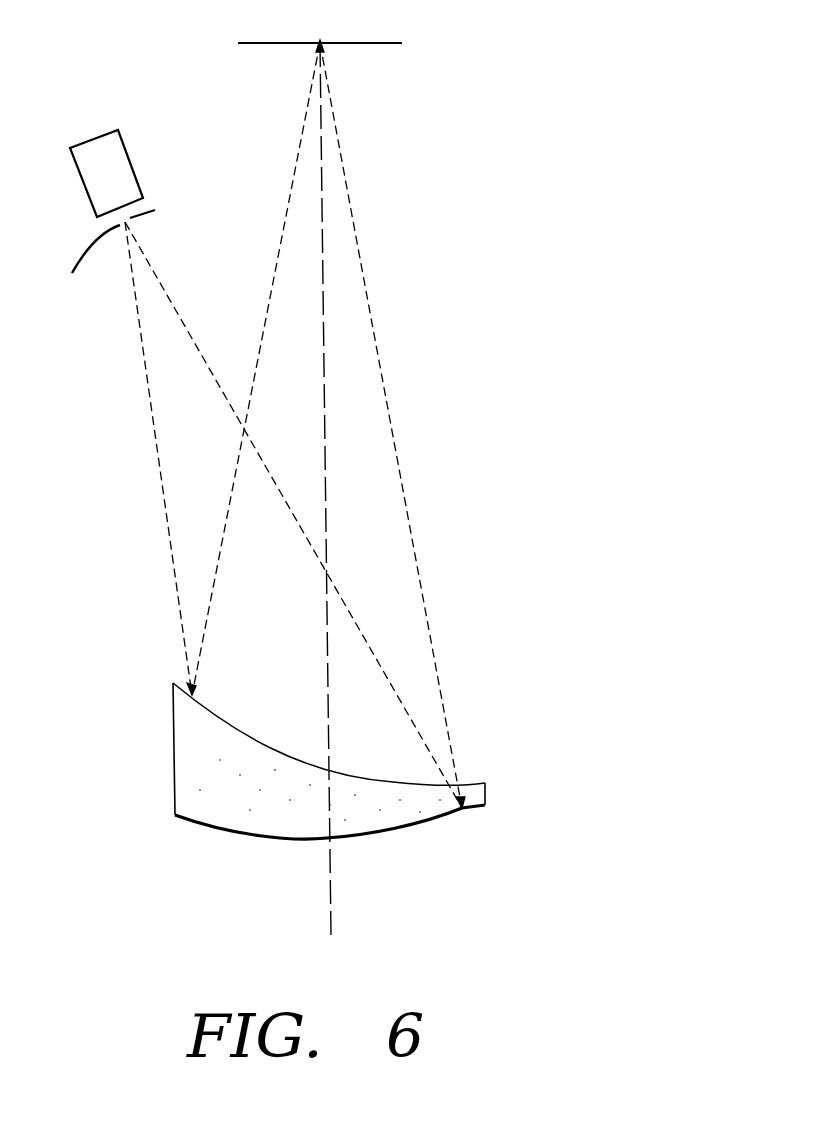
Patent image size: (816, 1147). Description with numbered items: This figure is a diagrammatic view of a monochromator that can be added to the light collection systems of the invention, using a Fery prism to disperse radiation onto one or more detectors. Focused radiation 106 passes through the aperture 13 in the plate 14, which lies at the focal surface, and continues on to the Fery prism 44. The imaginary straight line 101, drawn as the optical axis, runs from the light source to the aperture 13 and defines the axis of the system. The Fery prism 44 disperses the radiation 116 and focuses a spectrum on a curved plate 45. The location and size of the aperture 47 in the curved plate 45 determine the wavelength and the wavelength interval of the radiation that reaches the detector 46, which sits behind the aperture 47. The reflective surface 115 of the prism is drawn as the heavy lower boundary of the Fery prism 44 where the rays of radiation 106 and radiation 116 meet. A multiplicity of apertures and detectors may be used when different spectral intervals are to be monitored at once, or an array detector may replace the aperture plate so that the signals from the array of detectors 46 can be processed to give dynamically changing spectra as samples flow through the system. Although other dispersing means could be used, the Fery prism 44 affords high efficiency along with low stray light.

The aperture 13 is at (322, 40).
The plate 14 is at (390, 44).
The Fery prism 44 is at (302, 773).
The curved plate 45 is at (78, 268).
The detector 46 is at (132, 160).
The aperture 47 is at (128, 222).
The imaginary straight line 101 is at (330, 870).
The focused radiation 106 is at (372, 383).
The reflective bottom surface of mirror 115 is at (400, 833).
The radiation 116 is at (173, 462).